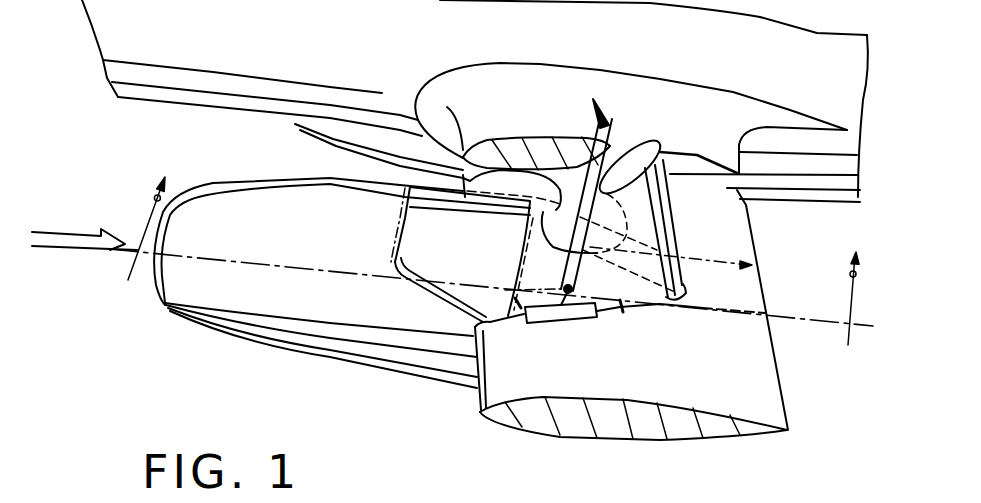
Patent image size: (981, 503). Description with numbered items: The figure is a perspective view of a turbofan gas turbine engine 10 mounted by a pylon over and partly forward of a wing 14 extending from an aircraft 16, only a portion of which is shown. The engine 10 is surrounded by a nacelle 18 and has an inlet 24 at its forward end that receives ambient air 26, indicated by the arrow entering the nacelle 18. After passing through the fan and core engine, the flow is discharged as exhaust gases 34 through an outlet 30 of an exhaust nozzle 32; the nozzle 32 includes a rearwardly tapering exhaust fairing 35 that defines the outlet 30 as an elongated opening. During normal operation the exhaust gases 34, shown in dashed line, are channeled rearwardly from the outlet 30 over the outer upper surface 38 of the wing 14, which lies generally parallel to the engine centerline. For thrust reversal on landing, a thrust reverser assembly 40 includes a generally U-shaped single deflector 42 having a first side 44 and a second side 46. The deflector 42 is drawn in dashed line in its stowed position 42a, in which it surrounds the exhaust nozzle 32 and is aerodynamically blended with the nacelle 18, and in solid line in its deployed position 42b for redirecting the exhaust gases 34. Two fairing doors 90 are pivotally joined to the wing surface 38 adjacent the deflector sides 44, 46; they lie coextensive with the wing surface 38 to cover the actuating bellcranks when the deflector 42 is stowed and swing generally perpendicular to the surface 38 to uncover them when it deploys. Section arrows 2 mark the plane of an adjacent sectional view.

The section line 2- 2 is at (496, 244).
The turbofan gas turbine engine 10 is at (282, 172).
The wing 14 is at (777, 404).
The aircraft 16 is at (226, 41).
The nacelle 18 is at (242, 297).
The inlet 24 is at (163, 303).
The ambient air 26 is at (68, 233).
The outlet 30 is at (545, 211).
The exhaust nozzle 32 is at (418, 249).
The exhaust gases 34 is at (593, 125).
The exhaust fairing 35 is at (493, 325).
The outer upper surface 38 is at (683, 400).
The thrust reverser assembly 40 is at (627, 312).
The deflector 42 is at (678, 213).
The stowed position 42a is at (400, 208).
The deployed position 42b is at (675, 302).
The first side 44 is at (622, 155).
The second side 46 is at (650, 148).
The fairing doors 90 is at (578, 312).